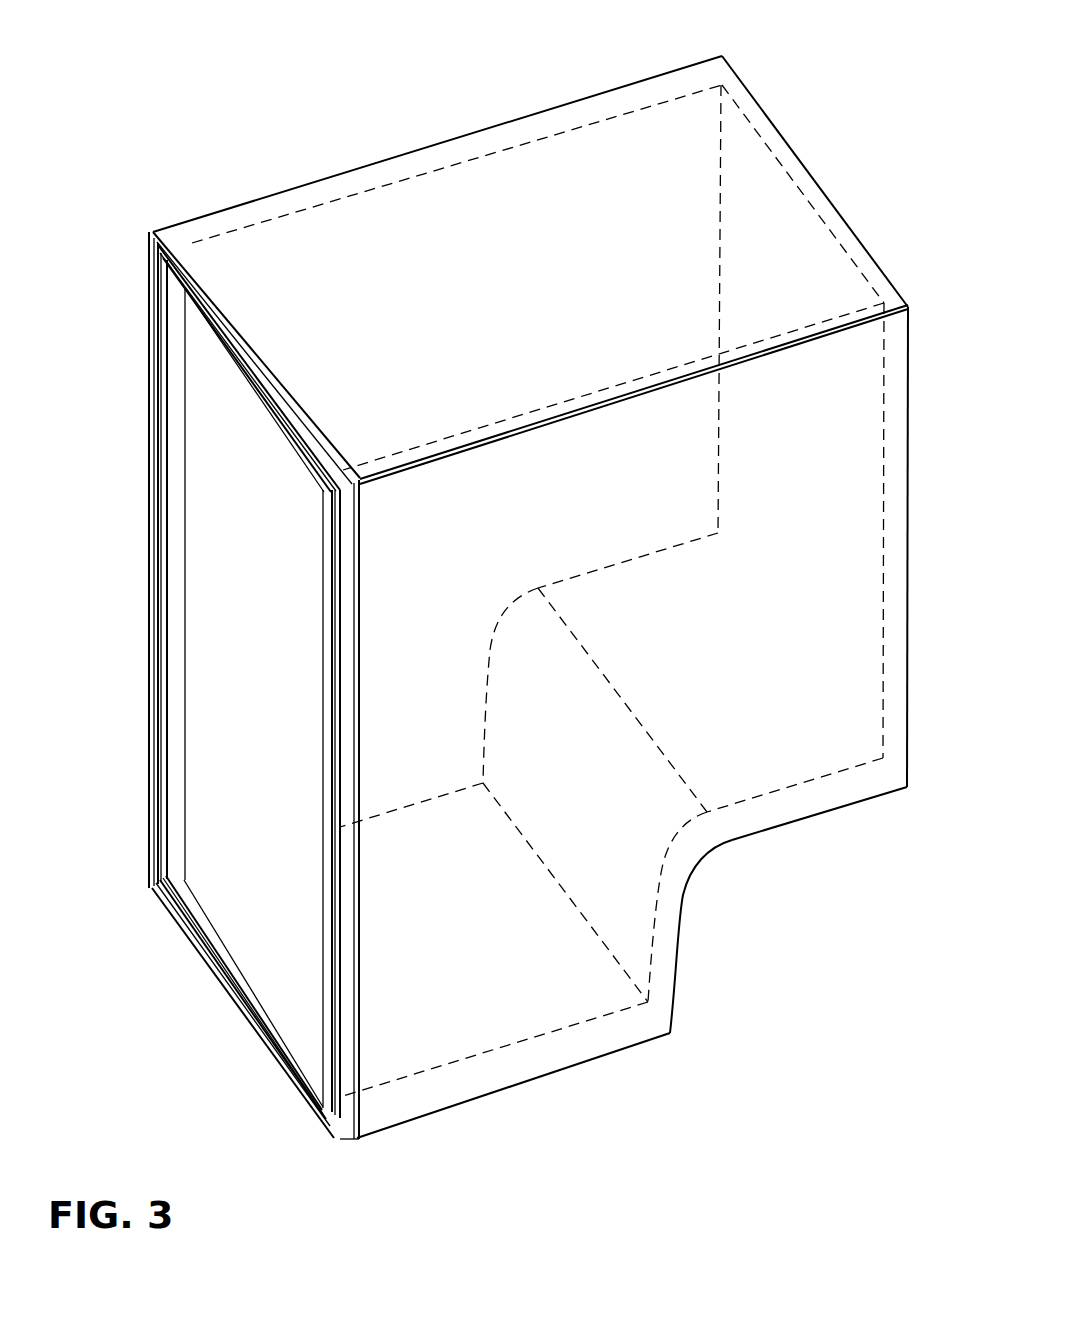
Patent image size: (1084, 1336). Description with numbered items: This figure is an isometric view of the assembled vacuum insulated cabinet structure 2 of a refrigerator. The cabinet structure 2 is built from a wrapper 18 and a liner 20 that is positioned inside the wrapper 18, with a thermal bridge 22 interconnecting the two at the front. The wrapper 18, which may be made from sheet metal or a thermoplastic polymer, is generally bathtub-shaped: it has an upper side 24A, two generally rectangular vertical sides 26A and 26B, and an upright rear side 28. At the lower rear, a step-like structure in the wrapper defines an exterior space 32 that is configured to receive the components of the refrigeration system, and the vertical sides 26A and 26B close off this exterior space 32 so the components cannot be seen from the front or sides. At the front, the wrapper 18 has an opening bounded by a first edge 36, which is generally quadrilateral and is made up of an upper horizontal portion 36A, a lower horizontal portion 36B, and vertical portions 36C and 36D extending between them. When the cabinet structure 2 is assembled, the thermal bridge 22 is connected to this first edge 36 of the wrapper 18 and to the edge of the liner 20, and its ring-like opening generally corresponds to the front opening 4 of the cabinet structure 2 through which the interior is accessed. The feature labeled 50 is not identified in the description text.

The vacuum insulated cabinet structure 2 is at (634, 86).
The opening 4 is at (211, 736).
The wrapper 18 is at (331, 162).
The liner 20 is at (906, 480).
The thermal bridge 22 is at (143, 535).
The upper side 24A is at (518, 178).
The vertical side 26A is at (417, 147).
The vertical side 26B is at (632, 1006).
The rear side 28 is at (846, 218).
The exterior space 32 is at (810, 847).
The first edge 36 is at (281, 672).
The upper horizontal portion 36A is at (230, 300).
The lower horizontal portion 36B is at (350, 1142).
The vertical portion 36C is at (148, 375).
The vertical portion 36D is at (358, 1103).
The flange 50 is at (185, 680).